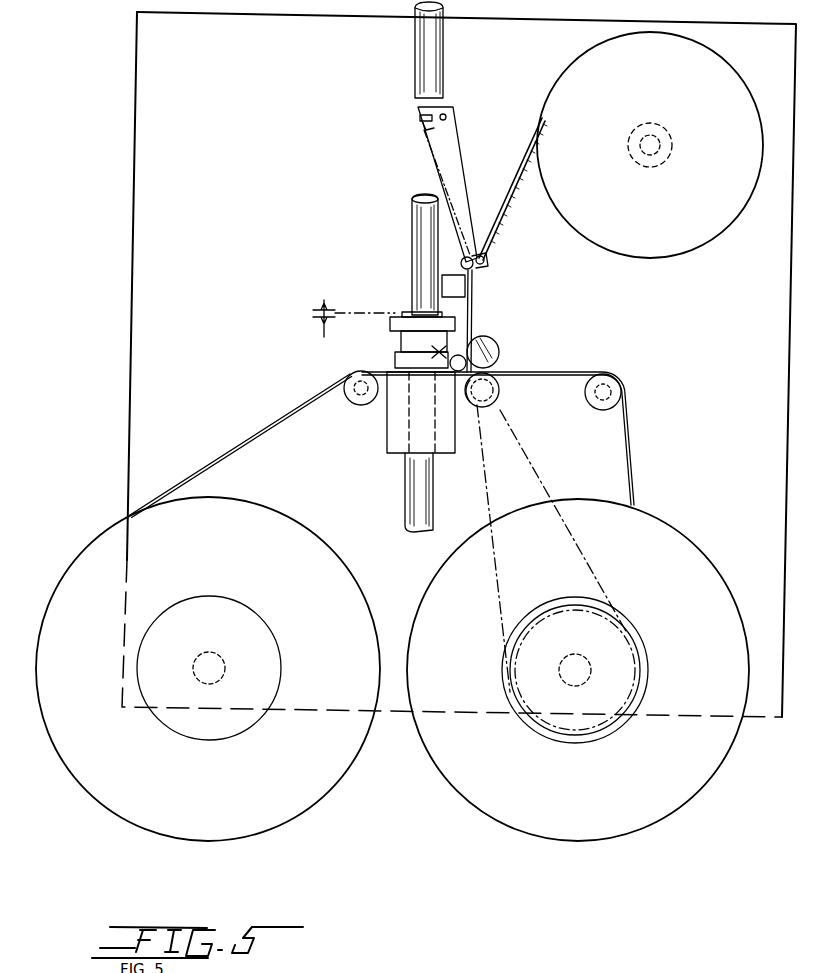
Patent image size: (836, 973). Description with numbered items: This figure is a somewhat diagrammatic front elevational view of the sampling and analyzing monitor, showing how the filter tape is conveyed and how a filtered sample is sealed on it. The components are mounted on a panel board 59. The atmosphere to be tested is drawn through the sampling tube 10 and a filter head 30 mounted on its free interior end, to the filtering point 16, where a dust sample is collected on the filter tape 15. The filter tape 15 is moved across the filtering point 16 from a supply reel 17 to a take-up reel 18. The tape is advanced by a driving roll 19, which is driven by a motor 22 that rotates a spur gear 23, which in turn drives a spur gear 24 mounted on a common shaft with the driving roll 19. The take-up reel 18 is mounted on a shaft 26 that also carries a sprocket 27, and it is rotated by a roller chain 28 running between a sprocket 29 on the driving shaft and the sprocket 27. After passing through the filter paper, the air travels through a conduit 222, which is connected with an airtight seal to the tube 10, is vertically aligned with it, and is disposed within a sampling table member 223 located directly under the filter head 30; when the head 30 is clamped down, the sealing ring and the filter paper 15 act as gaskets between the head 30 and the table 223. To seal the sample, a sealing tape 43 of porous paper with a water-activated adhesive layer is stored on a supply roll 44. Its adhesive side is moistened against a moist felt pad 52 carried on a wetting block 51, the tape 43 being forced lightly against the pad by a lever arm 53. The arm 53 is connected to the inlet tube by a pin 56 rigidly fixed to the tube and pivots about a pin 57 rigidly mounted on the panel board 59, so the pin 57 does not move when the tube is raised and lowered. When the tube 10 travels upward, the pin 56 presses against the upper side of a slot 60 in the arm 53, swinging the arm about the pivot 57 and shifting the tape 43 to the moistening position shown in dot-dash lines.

The panel board 59 is at (459, 364).
The sampling tube 10 is at (415, 64).
The lever arm 53 is at (456, 157).
The pin 57 is at (447, 116).
The pin 56 is at (420, 118).
The slot 60 is at (424, 130).
The sealing tape 43 is at (498, 216).
The supply roll 44 is at (707, 243).
The felt pad 52 is at (466, 289).
The wetting block 51 is at (447, 278).
The filter head 30 is at (398, 315).
The pressure point 23 is at (438, 351).
The filtering point 16 is at (395, 362).
The motor 22 is at (478, 342).
The driving roll 19 is at (500, 388).
The spur gear 24 is at (500, 397).
The sprocket 29 is at (492, 408).
The filter tape 15 is at (257, 436).
The sampling table member 223 is at (388, 447).
The conduit 222 is at (408, 498).
The shaft 26 is at (588, 685).
The roller chain 28 is at (583, 556).
The sprocket 27 is at (640, 658).
The supply reel 17 is at (272, 833).
The take-up reel 18 is at (655, 832).